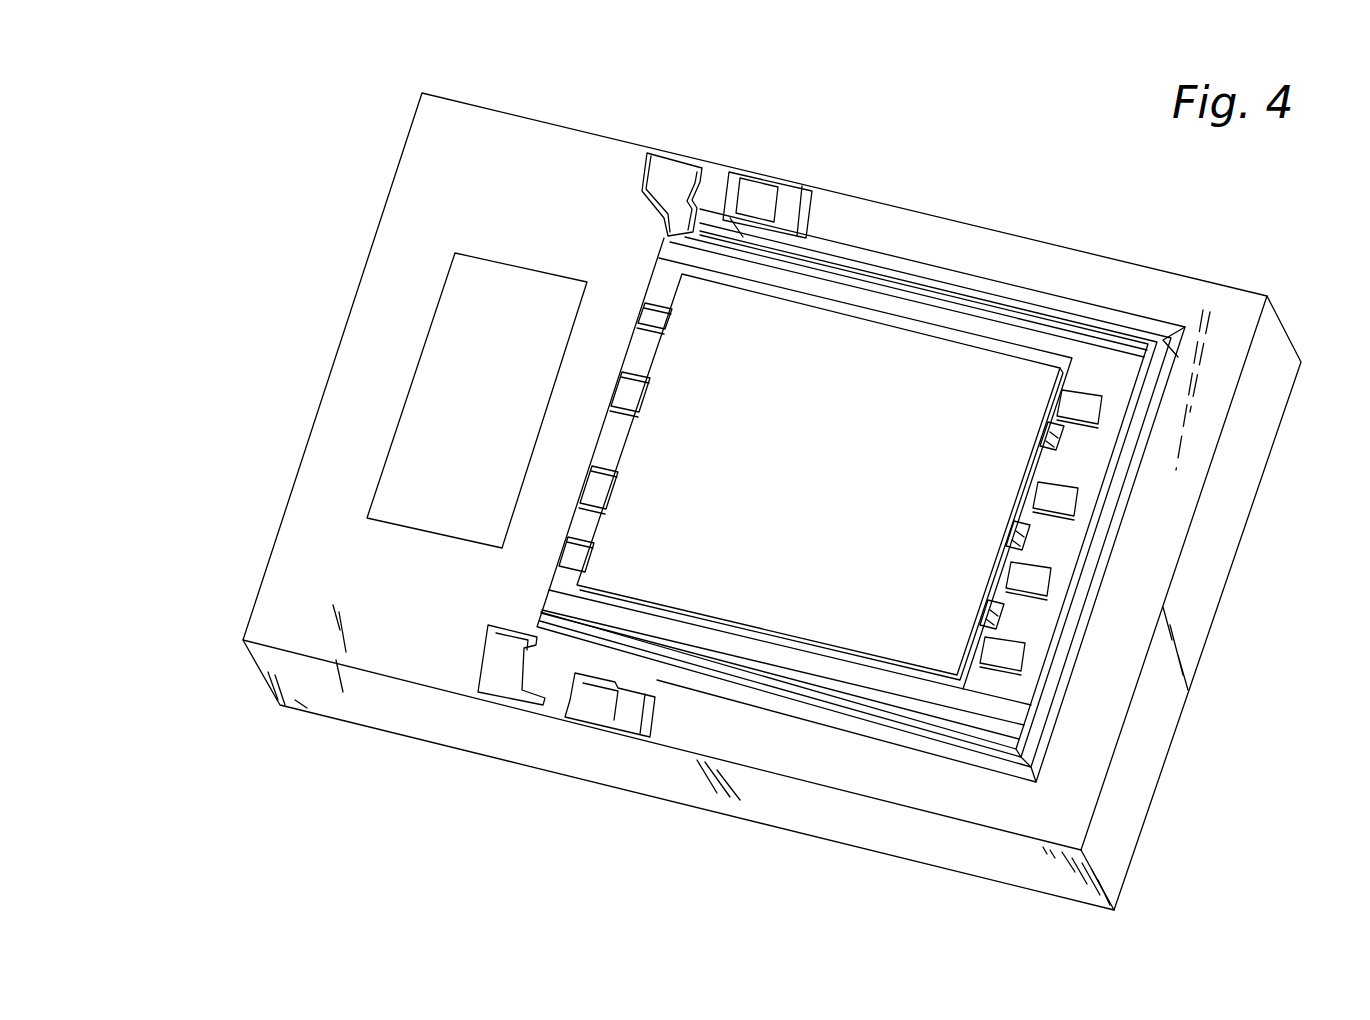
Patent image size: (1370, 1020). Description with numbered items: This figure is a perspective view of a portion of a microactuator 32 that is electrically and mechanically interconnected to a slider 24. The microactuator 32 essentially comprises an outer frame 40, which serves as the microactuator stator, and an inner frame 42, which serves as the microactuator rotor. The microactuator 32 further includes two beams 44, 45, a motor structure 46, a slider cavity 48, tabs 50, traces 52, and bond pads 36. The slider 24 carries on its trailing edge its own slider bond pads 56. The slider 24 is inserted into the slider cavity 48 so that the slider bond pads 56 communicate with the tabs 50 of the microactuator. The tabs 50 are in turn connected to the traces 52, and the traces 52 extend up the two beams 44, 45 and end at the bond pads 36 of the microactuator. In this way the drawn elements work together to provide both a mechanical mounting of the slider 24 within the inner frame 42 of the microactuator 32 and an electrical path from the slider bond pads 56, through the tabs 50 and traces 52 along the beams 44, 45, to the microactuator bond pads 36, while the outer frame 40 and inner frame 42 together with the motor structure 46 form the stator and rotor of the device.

The slider 24 is at (798, 387).
The microactuator 32 is at (1286, 408).
The bond pads 36 is at (670, 177).
The outer frame 40 is at (1028, 253).
The inner frame 42 is at (592, 147).
The beam 44 is at (940, 282).
The beam 45 is at (900, 735).
The motor structure 46 is at (388, 460).
The slider cavity 48 is at (822, 638).
The tabs 50 is at (645, 390).
The traces 52 is at (1140, 336).
The slider bond pads 56 is at (1045, 434).